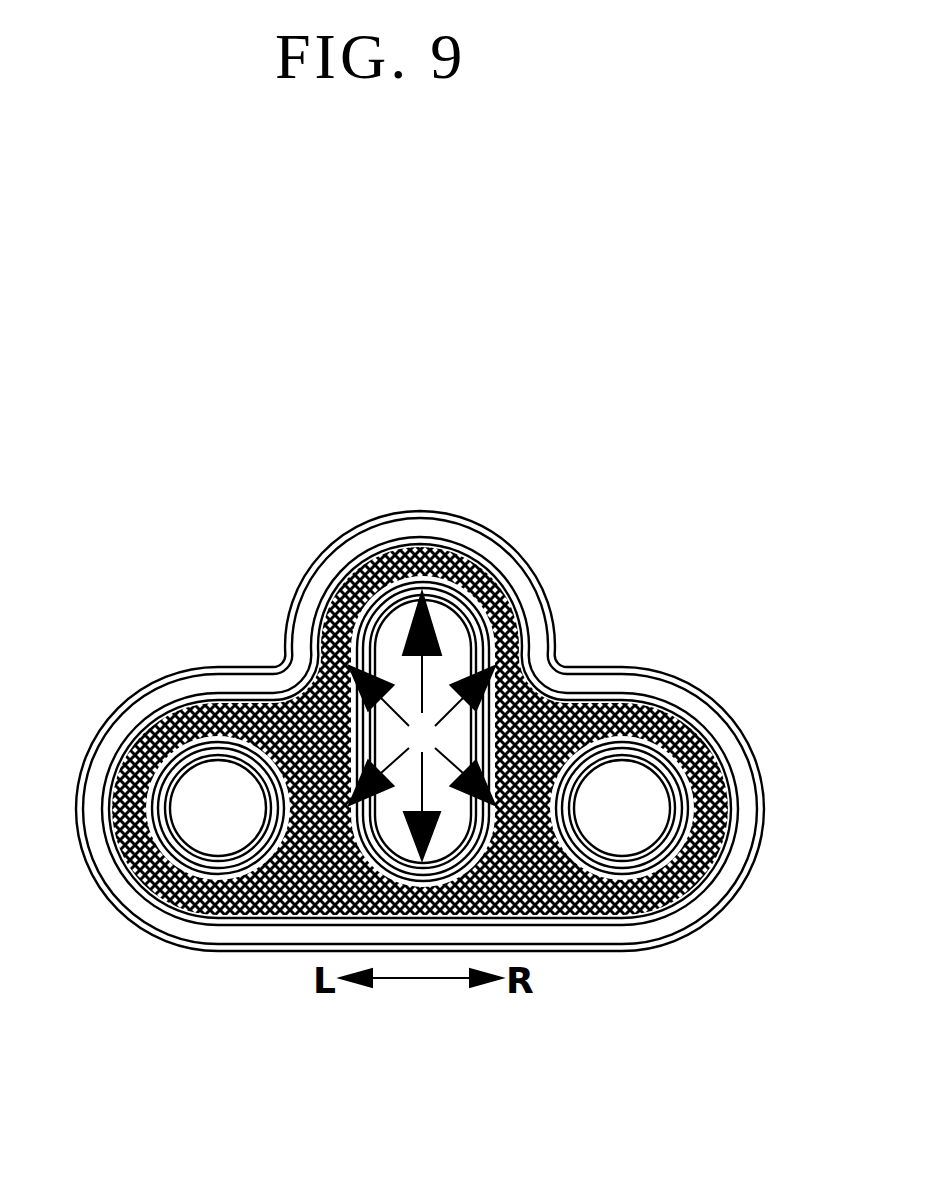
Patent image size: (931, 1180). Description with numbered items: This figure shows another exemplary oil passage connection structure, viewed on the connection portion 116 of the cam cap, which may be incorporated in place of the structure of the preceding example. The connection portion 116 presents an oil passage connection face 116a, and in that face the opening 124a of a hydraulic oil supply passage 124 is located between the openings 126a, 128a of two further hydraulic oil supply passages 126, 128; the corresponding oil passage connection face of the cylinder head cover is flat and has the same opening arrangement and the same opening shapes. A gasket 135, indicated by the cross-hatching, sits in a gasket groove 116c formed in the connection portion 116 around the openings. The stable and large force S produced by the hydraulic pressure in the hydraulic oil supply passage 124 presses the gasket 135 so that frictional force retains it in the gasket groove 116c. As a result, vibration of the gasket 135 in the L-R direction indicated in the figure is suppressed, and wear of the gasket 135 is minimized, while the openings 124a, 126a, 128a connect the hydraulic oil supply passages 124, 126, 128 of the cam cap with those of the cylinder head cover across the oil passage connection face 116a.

The connection portion 116 is at (420, 714).
The oil passage connection face 116a is at (420, 731).
The gasket groove 116c is at (459, 731).
The hydraulic oil supply passage 124 is at (367, 727).
The opening 124a is at (499, 731).
The gasket 135 is at (599, 668).
The hydraulic oil supply passage 126 is at (200, 818).
The opening 126a is at (250, 916).
The hydraulic oil supply passage 128 is at (640, 836).
The opening 128a is at (589, 917).